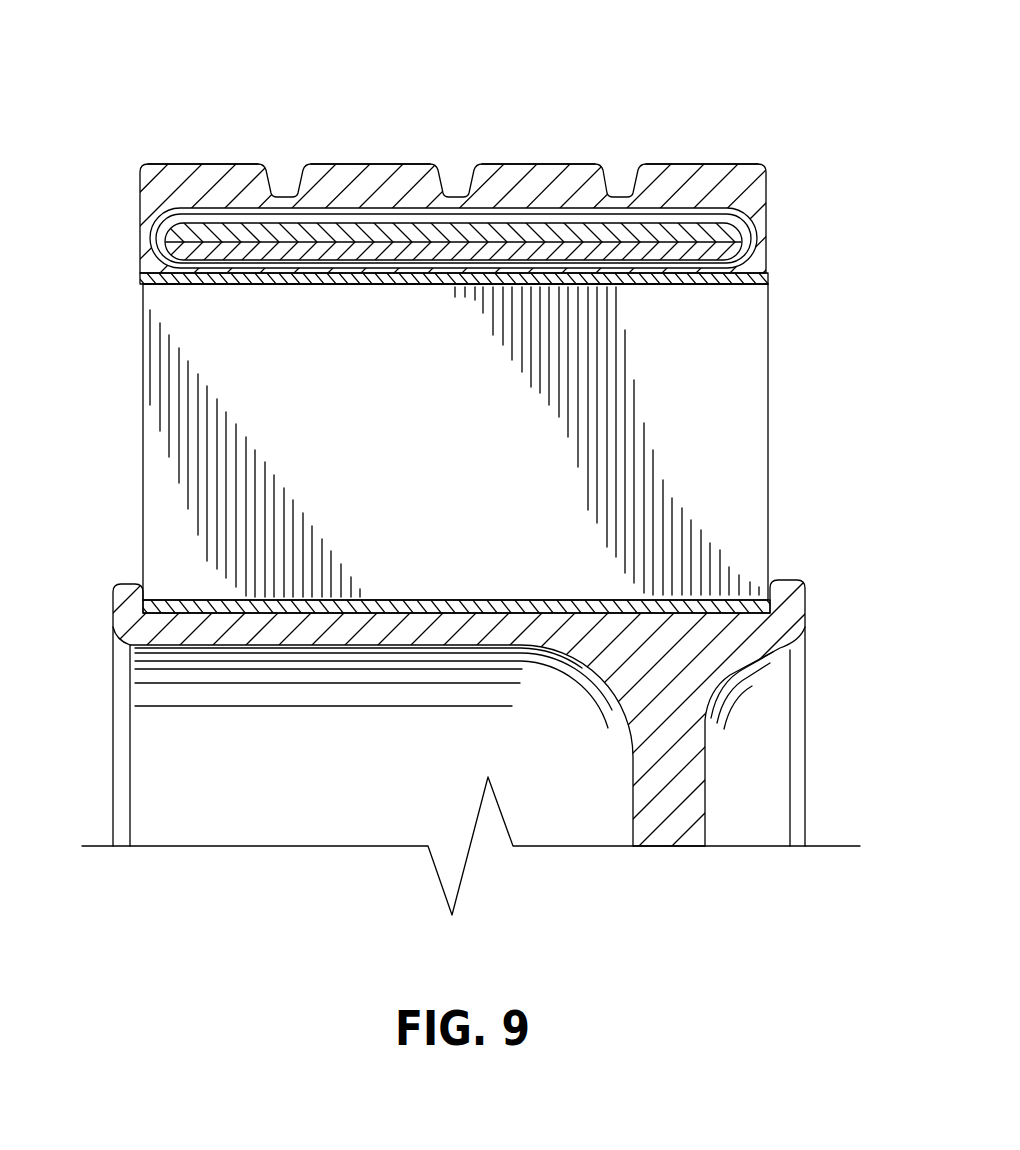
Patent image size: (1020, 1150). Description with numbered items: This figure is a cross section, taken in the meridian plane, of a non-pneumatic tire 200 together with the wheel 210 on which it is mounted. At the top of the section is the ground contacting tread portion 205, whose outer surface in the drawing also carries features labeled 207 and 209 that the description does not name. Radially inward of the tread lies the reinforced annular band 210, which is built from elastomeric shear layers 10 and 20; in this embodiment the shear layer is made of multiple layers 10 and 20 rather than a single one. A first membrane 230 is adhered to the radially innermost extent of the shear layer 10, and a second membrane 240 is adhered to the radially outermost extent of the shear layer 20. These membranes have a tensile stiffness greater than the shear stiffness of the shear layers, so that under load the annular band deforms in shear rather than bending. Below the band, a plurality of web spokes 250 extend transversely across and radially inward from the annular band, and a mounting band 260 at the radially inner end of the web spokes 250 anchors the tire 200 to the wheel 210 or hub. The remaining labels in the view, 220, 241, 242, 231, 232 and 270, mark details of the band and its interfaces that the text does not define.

The tire 200 is at (455, 141).
The ground contacting tread portion 205 is at (245, 163).
The second projection of cap 207 is at (452, 183).
The third projection of cap 209 is at (522, 162).
The second membrane 240 is at (662, 162).
The inner surface of cap 241 is at (733, 213).
The inner surface of cap 242 is at (455, 199).
The elastomeric shear layer 20 is at (491, 258).
The elastomeric shear layer 10 is at (755, 258).
The sealing liner layer 220 is at (345, 268).
The first membrane 230 is at (493, 283).
The top surface of body 270 is at (578, 284).
The liner layer 231 is at (714, 268).
The liner layer 232 is at (513, 302).
The web spokes 250 is at (455, 441).
The mounting band 260 is at (420, 598).
The reinforced annular band 210 is at (140, 245).